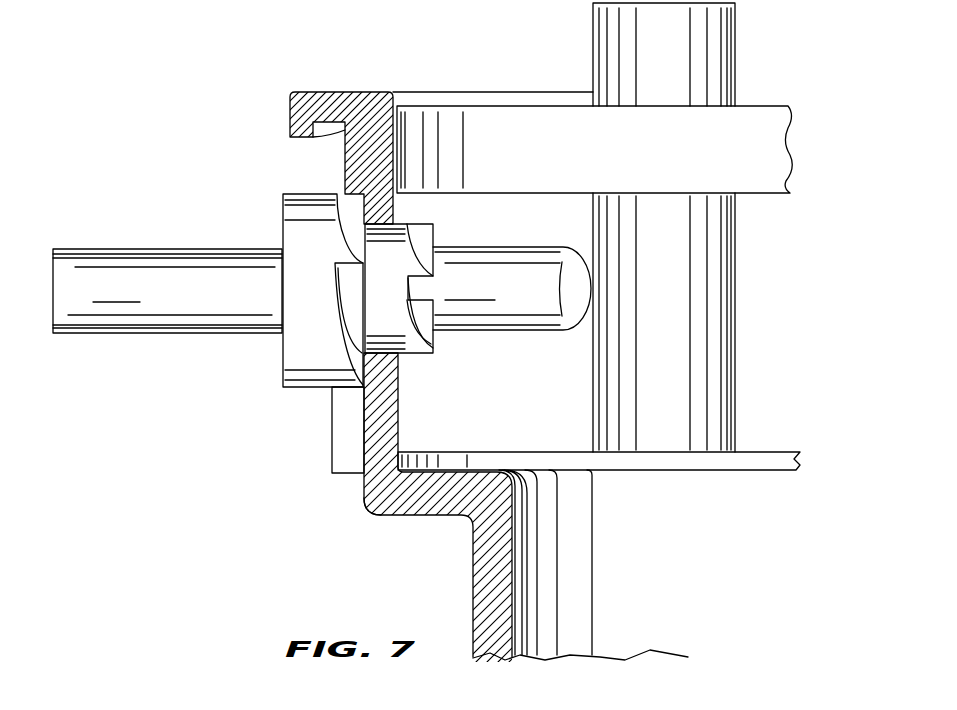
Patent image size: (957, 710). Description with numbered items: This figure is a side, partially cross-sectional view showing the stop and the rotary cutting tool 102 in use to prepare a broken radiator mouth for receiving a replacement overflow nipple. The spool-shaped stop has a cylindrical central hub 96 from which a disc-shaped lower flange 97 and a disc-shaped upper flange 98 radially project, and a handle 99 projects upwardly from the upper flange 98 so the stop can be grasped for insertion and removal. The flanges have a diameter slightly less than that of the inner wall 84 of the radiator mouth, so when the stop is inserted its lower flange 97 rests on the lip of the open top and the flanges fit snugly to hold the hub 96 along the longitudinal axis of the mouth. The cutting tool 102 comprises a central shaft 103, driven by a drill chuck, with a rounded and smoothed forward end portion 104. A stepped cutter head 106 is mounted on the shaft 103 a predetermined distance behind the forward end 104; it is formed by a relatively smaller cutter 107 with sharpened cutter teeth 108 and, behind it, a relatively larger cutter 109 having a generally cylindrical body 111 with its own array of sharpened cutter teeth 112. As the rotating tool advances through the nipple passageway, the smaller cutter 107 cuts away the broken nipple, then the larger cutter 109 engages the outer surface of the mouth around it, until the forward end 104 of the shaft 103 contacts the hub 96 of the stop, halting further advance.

The inner wall surface 84 is at (398, 422).
The cylindrical central hub 96 is at (698, 295).
The lower flange 97 is at (540, 452).
The upper flange 98 is at (533, 127).
The handle 99 is at (697, 48).
The rotary cutting tool 102 is at (208, 402).
The central shaft 103 is at (158, 277).
The forward end portion 104 is at (560, 252).
The stepped cutter head 106 is at (320, 410).
The relatively smaller cutter 107 is at (411, 363).
The sharpened cutter teeth 108 is at (433, 235).
The relatively larger cutter 109 is at (297, 186).
The generally cylindrical body 111 is at (298, 335).
The sharpened cutter teeth 112 is at (367, 487).